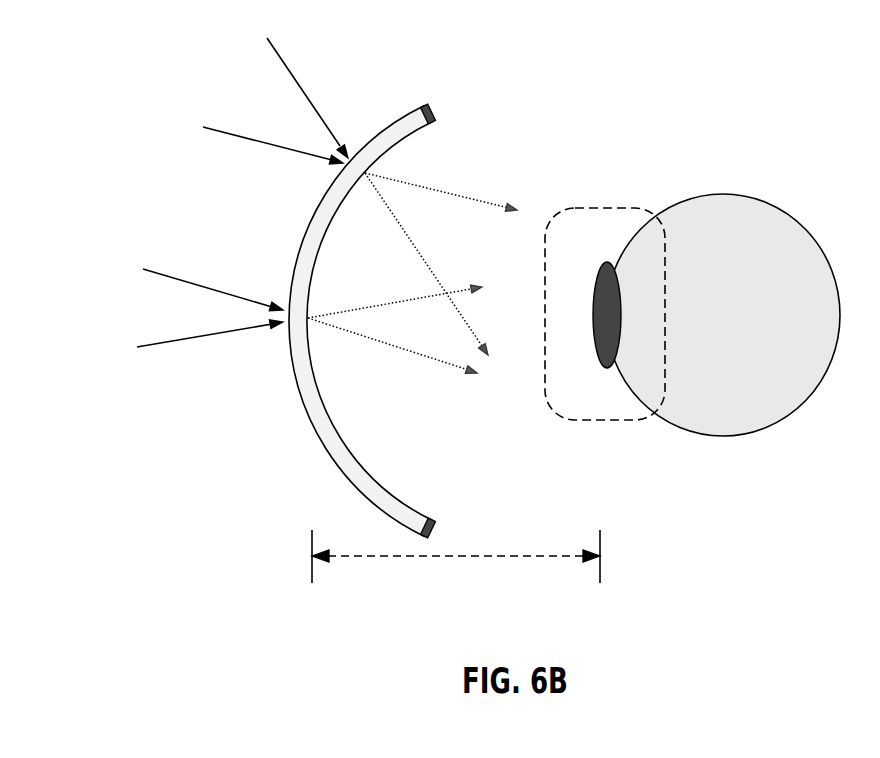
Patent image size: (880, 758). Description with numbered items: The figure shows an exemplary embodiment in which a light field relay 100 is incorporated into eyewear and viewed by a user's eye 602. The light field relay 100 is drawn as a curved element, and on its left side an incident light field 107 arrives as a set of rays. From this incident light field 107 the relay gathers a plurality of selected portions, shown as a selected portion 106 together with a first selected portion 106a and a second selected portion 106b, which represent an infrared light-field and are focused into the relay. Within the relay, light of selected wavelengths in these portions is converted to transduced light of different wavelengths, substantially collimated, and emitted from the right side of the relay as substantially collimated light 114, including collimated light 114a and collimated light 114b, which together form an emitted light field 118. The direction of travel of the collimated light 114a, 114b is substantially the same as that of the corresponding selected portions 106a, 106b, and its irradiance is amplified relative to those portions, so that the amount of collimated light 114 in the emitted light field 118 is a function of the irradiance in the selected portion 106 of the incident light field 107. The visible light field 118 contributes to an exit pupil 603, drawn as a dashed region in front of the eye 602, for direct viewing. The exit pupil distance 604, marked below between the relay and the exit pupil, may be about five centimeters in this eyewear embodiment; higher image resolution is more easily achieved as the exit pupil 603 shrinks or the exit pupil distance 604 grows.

The light field relay 100 is at (313, 427).
The selected portion 106 is at (234, 277).
The first selected portion 106a is at (267, 162).
The second selected portion 106b is at (326, 87).
The incident light field 107 is at (227, 82).
The substantially collimated light 114 is at (390, 370).
The first substantially collimated light 114a is at (442, 172).
The second substantially collimated light 114b is at (414, 283).
The emitted light field 118 is at (542, 295).
The eye 602 is at (797, 217).
The exit pupil 603 is at (608, 434).
The exit pupil distance 604 is at (455, 574).